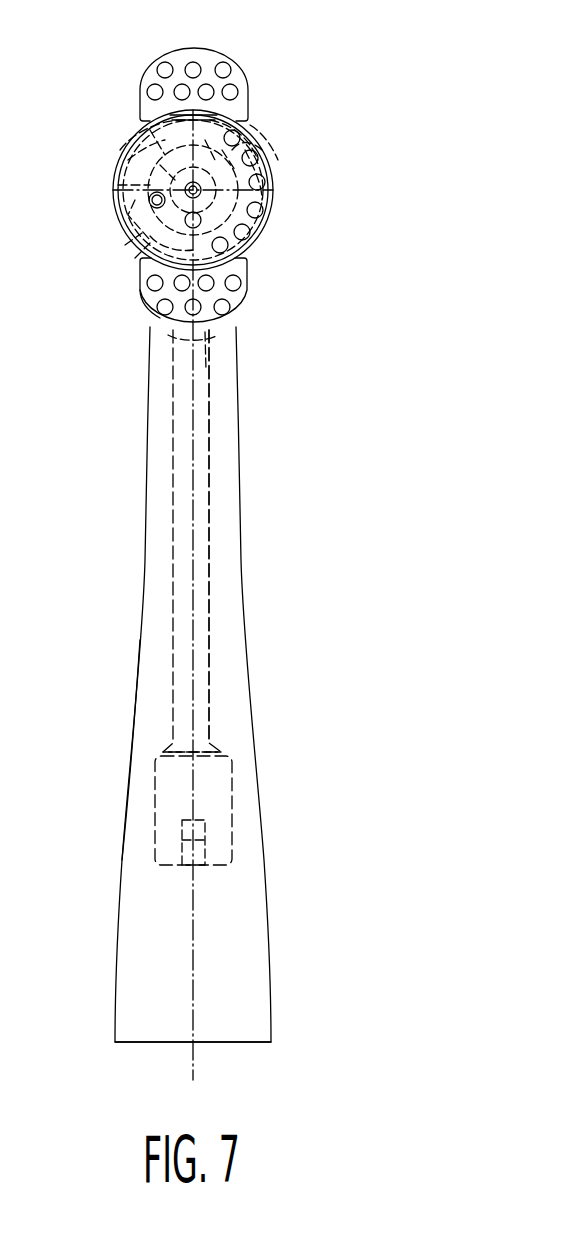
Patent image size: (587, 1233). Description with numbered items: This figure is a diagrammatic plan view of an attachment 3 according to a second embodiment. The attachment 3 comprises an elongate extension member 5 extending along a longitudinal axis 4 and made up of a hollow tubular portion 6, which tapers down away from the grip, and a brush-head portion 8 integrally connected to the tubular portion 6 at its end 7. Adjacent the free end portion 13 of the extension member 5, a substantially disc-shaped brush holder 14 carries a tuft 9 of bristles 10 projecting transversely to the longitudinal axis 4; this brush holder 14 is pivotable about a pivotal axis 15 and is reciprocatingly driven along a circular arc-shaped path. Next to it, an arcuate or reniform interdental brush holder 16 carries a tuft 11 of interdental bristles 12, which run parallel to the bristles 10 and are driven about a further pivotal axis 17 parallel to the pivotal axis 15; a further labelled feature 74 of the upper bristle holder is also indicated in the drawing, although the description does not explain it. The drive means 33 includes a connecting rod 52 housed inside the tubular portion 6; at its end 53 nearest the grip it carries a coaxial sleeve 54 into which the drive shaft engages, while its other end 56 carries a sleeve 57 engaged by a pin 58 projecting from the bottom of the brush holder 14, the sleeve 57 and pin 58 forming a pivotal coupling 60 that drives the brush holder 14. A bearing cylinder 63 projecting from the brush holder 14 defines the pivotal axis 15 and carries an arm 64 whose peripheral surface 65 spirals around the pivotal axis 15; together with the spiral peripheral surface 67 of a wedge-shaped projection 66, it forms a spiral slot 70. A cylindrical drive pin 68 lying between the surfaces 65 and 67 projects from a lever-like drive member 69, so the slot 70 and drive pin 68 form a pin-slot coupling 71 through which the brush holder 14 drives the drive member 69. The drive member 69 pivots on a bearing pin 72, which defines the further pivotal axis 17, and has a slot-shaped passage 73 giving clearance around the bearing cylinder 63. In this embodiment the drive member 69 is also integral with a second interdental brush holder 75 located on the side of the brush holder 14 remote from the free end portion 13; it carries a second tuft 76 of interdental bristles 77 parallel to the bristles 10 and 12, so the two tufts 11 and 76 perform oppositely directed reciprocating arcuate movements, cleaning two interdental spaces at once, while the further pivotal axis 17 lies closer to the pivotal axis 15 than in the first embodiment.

The attachment 3 is at (322, 394).
The longitudinal axis 4 is at (188, 940).
The extension member 5 is at (140, 598).
The tubular portion 6 is at (258, 970).
The end of the tubular portion 7 is at (238, 265).
The brush-head portion 8 is at (140, 150).
The tuft of bristles 9 is at (272, 215).
The bristles 10 is at (262, 180).
The tuft of interdental bristles 11 is at (225, 56).
The interdental bristles 12 is at (148, 66).
The free end portion 13 is at (226, 88).
The brush holder 14 is at (148, 92).
The pivotal axis 15 is at (186, 187).
The interdental brush holder 16 is at (206, 55).
The further pivotal axis 17 is at (122, 262).
The drive means 33 is at (212, 382).
The connecting rod 52 is at (173, 462).
The end of the connecting rod 53 is at (207, 723).
The coaxial sleeve 54 is at (225, 813).
The other end of the connecting rod 56 is at (140, 226).
The sleeve 57 is at (118, 182).
The pin 58 is at (112, 203).
The pivotal coupling 60 is at (112, 216).
The bearing cylinder 63 is at (126, 140).
The arm 64 is at (246, 126).
The peripheral surface of the arm 65 is at (272, 166).
The wedge-shaped projection 66 is at (250, 246).
The peripheral surface of the projection 67 is at (264, 232).
The drive pin 68 is at (274, 192).
The drive member 69 is at (208, 336).
The slot 70 is at (256, 134).
The pin-slot coupling 71 is at (140, 280).
The bearing pin 72 is at (130, 262).
The slot-shaped passage 73 is at (130, 160).
The bristle tuft 74 is at (170, 66).
The second interdental brush holder 75 is at (154, 347).
The second tuft of interdental bristles 76 is at (150, 311).
The interdental bristles of the second tuft 77 is at (230, 305).